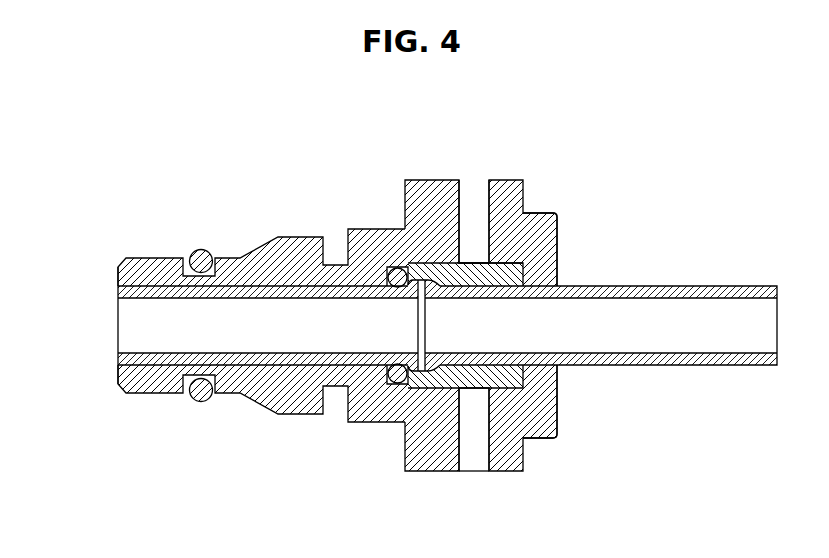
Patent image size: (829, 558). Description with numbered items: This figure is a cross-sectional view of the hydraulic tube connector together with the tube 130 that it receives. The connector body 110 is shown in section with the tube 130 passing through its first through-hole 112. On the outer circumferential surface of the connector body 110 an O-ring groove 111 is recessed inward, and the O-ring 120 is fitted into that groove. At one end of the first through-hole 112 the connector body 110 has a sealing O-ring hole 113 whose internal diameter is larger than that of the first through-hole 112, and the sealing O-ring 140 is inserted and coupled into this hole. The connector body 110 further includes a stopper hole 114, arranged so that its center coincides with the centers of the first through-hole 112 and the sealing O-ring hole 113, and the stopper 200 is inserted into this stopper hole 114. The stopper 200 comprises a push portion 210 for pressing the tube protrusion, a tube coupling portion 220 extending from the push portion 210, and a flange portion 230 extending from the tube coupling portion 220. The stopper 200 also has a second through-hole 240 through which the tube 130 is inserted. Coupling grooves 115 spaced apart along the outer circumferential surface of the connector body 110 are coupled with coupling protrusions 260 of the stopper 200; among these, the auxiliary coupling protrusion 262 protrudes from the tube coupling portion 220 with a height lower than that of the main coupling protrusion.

The connector body 110 is at (301, 226).
The O-ring groove 111 is at (189, 265).
The first through-hole 112 is at (145, 302).
The sealing O-ring hole 113 is at (392, 268).
The stopper hole 114 is at (495, 264).
The coupling groove 115 is at (476, 198).
The O-ring 120 is at (200, 400).
The tube 130 is at (728, 288).
The sealing O-ring 140 is at (397, 385).
The stopper 200 is at (574, 207).
The push portion 210 is at (438, 263).
The tube coupling portion 220 is at (500, 392).
The flange portion 230 is at (552, 242).
The second through-hole 240 is at (528, 369).
The coupling protrusion 260 is at (448, 506).
The auxiliary coupling protrusion 262 is at (476, 393).